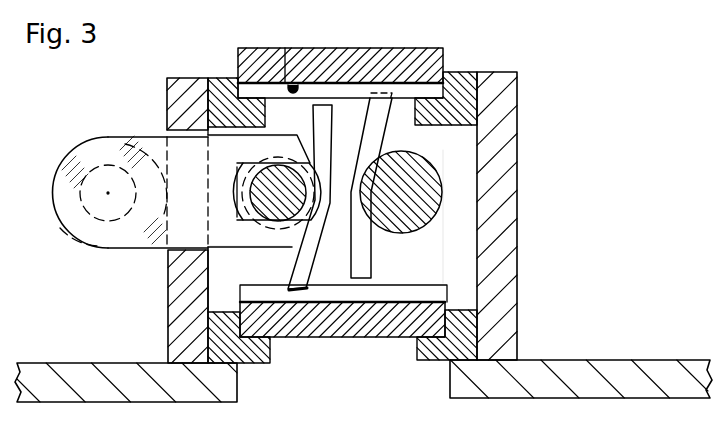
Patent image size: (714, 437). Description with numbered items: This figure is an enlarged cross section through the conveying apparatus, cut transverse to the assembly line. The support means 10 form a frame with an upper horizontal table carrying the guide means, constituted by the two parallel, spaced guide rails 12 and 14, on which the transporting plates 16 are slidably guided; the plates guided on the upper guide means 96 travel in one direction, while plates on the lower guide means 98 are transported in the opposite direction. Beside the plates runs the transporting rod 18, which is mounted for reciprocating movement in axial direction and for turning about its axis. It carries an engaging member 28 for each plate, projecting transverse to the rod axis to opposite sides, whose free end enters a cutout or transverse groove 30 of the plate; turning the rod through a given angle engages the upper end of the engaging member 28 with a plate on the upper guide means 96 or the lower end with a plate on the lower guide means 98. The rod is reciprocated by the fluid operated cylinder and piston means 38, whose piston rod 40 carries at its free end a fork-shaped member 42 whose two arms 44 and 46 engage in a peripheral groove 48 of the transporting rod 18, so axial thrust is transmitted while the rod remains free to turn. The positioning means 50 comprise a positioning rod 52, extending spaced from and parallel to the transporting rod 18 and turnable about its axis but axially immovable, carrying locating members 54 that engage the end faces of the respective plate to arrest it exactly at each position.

The support means 10 is at (597, 360).
The guide rail 12 is at (467, 71).
The guide rail 14 is at (218, 78).
The transporting plate 16 is at (363, 56).
The transporting rod 18 is at (290, 206).
The engaging member 28 is at (323, 137).
The transverse groove 30 is at (292, 85).
The fluid operated cylinder and piston means 38 is at (99, 238).
The piston rod 40 is at (68, 224).
The fork-shaped member 42 is at (157, 235).
The arm 44 is at (279, 146).
The arm 46 is at (282, 243).
The peripheral groove 48 is at (232, 224).
The positioning means 50 is at (449, 198).
The positioning rod 52 is at (420, 216).
The locating member 54 is at (378, 128).
The upper guide means 96 is at (452, 70).
The lower guide means 98 is at (461, 301).